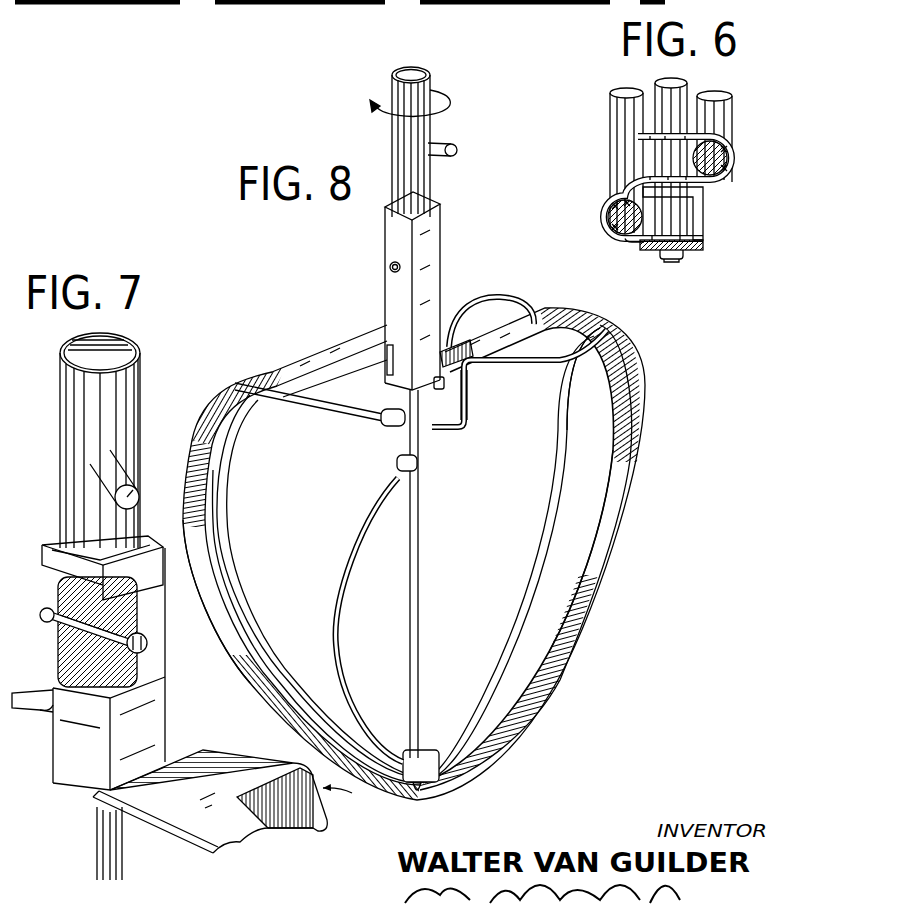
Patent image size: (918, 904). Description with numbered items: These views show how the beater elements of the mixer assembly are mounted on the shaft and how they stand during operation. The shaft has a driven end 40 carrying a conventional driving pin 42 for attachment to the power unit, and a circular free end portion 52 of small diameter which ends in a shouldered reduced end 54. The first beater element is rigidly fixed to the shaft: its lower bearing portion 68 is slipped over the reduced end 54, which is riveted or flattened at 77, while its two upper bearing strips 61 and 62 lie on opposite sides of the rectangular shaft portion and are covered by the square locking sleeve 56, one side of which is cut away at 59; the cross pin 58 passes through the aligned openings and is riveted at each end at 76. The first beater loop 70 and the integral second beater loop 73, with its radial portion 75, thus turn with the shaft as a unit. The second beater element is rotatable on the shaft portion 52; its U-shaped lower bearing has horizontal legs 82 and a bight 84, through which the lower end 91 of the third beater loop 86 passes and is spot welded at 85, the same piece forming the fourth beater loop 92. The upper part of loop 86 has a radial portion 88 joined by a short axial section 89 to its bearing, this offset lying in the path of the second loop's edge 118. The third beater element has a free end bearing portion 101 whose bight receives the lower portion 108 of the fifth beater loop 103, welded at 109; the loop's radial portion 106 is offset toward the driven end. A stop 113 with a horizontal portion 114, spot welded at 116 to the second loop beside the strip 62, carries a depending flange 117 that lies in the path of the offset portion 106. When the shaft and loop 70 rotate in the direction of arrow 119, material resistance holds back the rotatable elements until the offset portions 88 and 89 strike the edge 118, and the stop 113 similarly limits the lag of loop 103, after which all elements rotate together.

In FIG. 7, the driven end 40 is at (82, 483).
In FIG. 8, the driven end 40 is at (427, 127).
In FIG. 7, the driving pin 42 is at (139, 478).
In FIG. 8, the driving pin 42 is at (455, 155).
In FIG. 6, the free end portion of shaft 52 is at (684, 89).
In FIG. 7, the free end portion of shaft 52 is at (107, 831).
In FIG. 6, the reduced end 54 is at (689, 253).
In FIG. 7, the locking sleeve 56 is at (147, 711).
In FIG. 8, the locking sleeve 56 is at (396, 281).
In FIG. 7, the cross pin 58 is at (48, 607).
In FIG. 7, the cut-away portion of sleeve 59 is at (50, 715).
In FIG. 7, the upper bearing strip 61 is at (62, 640).
In FIG. 7, the upper bearing strip 62 is at (135, 608).
In FIG. 6, the lower bearing portion 68 is at (638, 249).
In FIG. 7, the lower bearing portion 68 is at (20, 703).
In FIG. 8, the first beater loop 70 is at (215, 592).
In FIG. 7, the second beater loop 73 is at (210, 833).
In FIG. 8, the second beater loop 73 is at (663, 347).
In FIG. 8, the radial portion of second loop 75 is at (520, 334).
In FIG. 7, the riveted pin ends 76 is at (148, 643).
In FIG. 8, the riveted pin ends 76 is at (391, 262).
In FIG. 6, the riveted shaft end 77 is at (672, 260).
In FIG. 6, the legs of U-shaped bearing 82 is at (694, 231).
In FIG. 6, the bight of U-shaped bearing 84 is at (612, 218).
In FIG. 6, the spot weld 85 is at (614, 203).
In FIG. 8, the third beater loop 86 is at (613, 472).
In FIG. 8, the radial portion of third loop 88 is at (549, 361).
In FIG. 8, the axial section 89 is at (467, 408).
In FIG. 6, the lower end of third loop 91 is at (616, 227).
In FIG. 8, the fourth beater loop 92 is at (270, 511).
In FIG. 6, the free end bearing portion 101 is at (700, 134).
In FIG. 8, the fifth beater loop 103 is at (556, 449).
In FIG. 8, the radial portion of fifth loop 106 is at (462, 322).
In FIG. 6, the lower portion of fifth loop 108 is at (724, 147).
In FIG. 6, the spot weld 109 is at (734, 158).
In FIG. 7, the stop 113 is at (367, 821).
In FIG. 7, the horizontal portion of stop 114 is at (190, 763).
In FIG. 7, the spot weld 116 is at (160, 784).
In FIG. 7, the depending flange 117 is at (274, 818).
In FIG. 8, the depending flange 117 is at (474, 337).
In FIG. 8, the edge of second beater loop 118 is at (446, 382).
In FIG. 8, the arrow 119 is at (374, 112).